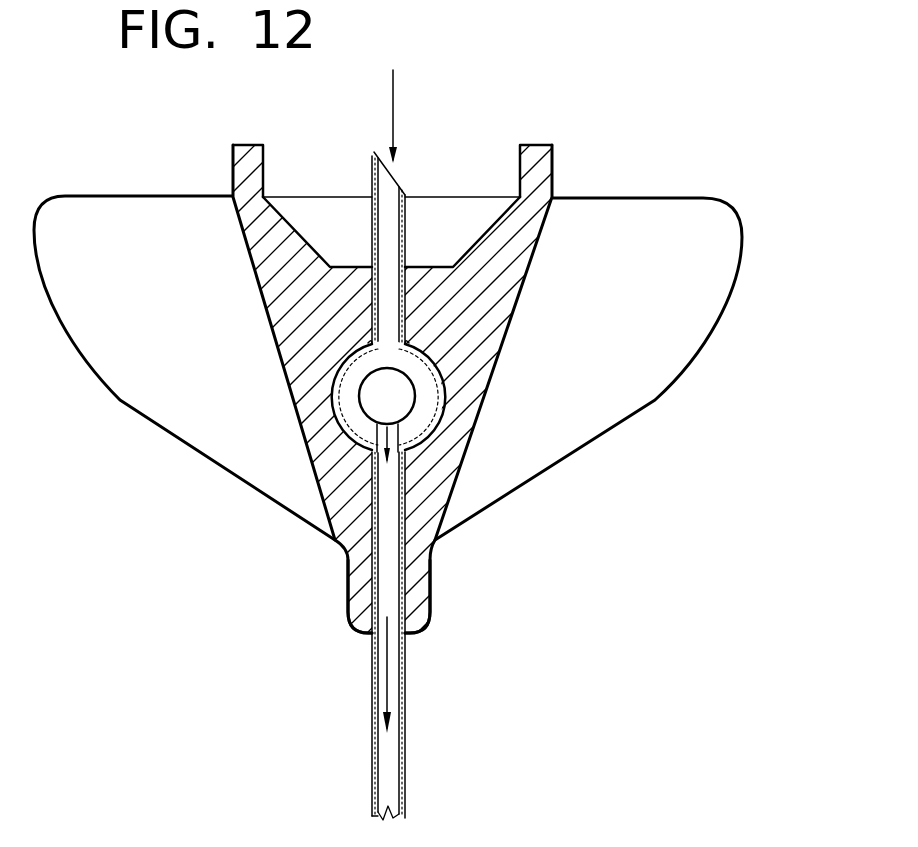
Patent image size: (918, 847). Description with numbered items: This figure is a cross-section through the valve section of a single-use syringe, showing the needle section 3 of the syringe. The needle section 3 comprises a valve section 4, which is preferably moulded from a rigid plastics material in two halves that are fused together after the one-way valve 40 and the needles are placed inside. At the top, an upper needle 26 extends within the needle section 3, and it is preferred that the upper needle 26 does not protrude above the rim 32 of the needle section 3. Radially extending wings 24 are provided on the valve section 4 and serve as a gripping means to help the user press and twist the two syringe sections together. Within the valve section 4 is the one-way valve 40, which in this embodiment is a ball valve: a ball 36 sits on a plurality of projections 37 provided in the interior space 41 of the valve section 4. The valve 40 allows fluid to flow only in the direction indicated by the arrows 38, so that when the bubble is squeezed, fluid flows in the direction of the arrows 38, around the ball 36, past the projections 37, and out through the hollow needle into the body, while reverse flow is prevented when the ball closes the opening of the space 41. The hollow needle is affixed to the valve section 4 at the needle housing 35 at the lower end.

The needle section 3 is at (213, 583).
The valve section 4 is at (317, 478).
The radially extending wings 24 is at (710, 295).
The upper needle 26 is at (372, 185).
The rim 32 is at (537, 152).
The needle housing 35 is at (425, 598).
The ball 36 is at (372, 398).
The projections 37 is at (417, 423).
The arrows 38 is at (393, 100).
The one-way valve 40 is at (470, 345).
The interior space 41 is at (355, 375).